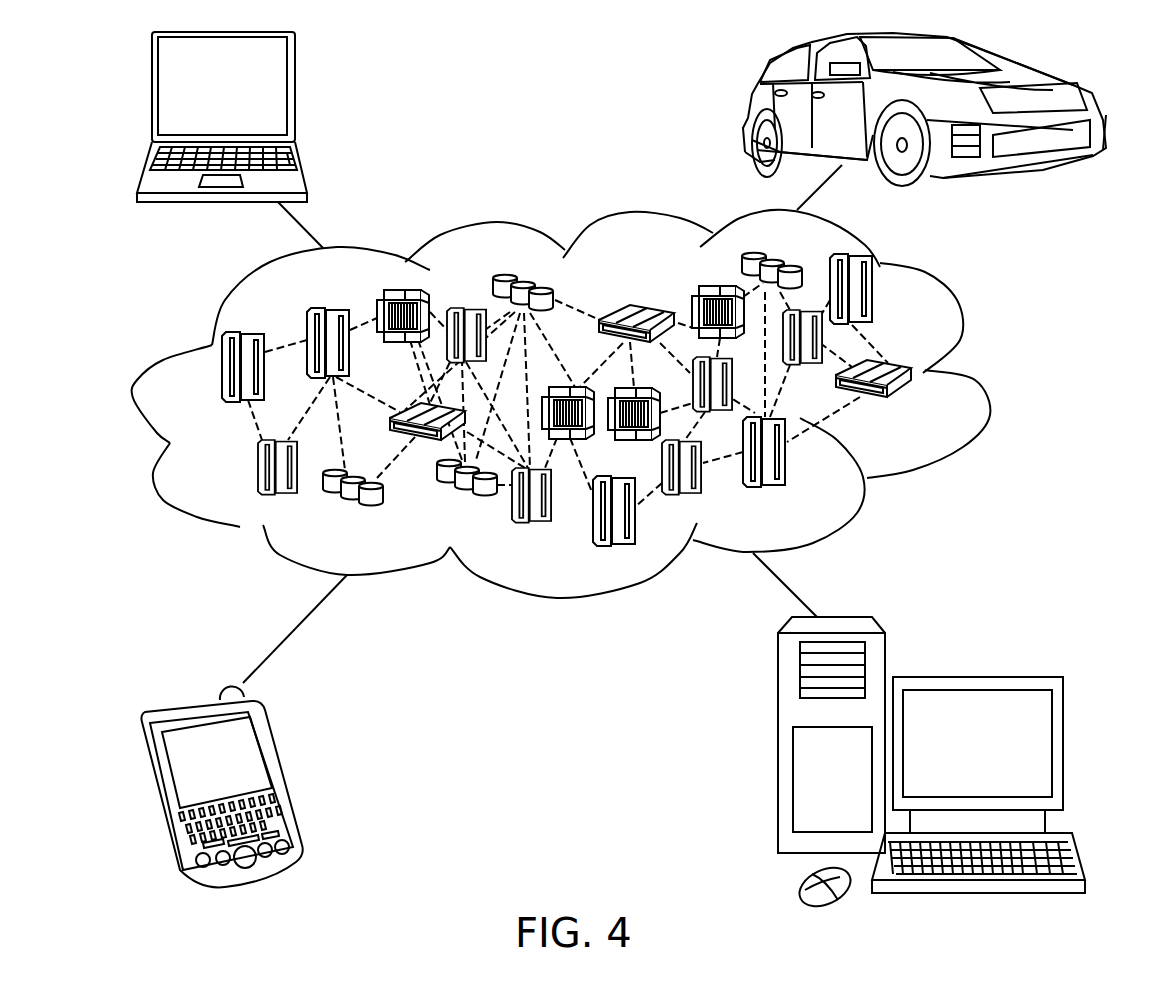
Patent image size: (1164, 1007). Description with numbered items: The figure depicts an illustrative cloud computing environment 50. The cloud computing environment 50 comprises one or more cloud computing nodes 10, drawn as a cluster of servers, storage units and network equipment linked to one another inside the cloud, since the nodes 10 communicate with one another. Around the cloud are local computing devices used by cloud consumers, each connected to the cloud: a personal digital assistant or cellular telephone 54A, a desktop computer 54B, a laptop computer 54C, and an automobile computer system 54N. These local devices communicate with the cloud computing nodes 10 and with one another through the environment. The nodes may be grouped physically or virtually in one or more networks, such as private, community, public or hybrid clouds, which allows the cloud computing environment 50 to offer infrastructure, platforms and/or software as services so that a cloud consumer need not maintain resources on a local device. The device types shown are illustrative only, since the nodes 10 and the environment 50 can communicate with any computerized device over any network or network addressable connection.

The cloud computing nodes 10 is at (915, 410).
The cloud computing environment 50 is at (977, 374).
The personal digital assistant or cellular telephone 54A is at (283, 776).
The desktop computer 54B is at (975, 675).
The laptop computer 54C is at (293, 91).
The automobile computer system 54N is at (748, 110).